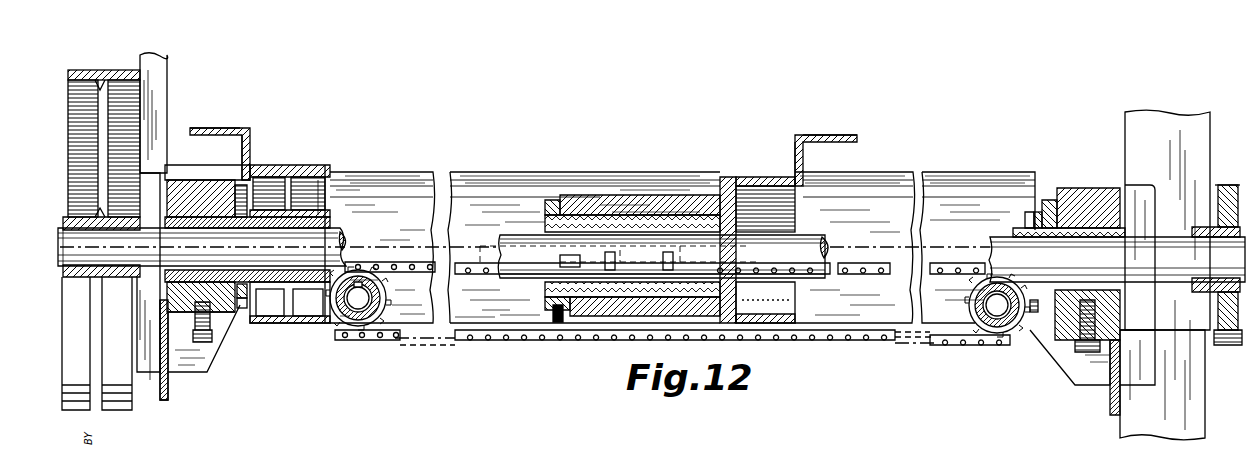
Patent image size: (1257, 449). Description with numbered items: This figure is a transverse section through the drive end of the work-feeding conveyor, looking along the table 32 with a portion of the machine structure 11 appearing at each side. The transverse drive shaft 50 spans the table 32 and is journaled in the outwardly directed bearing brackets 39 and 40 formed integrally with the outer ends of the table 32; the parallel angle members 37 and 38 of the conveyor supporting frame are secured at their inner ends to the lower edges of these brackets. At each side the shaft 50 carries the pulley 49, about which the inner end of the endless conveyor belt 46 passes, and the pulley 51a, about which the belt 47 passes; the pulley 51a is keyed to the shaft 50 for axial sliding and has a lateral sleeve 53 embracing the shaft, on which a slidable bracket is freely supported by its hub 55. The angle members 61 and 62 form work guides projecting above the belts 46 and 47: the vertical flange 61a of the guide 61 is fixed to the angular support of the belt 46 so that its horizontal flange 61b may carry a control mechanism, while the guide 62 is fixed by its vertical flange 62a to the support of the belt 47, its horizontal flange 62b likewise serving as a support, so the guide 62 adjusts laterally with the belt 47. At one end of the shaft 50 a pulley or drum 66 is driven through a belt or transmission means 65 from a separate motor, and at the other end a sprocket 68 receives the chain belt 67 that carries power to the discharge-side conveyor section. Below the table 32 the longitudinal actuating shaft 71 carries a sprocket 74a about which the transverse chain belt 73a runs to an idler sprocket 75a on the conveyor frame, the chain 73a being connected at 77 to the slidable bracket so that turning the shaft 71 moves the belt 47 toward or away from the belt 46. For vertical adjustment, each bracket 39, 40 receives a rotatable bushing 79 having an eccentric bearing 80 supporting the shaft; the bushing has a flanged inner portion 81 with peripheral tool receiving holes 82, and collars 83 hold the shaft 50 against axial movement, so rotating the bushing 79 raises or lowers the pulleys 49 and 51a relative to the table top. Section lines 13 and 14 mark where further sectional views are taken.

The machine frame wall 11 is at (133, 58).
The section line 13 is at (544, 413).
The section line 14 is at (1033, 422).
The table 32 is at (460, 312).
The angle member 37 is at (1120, 405).
The angle member 38 is at (168, 388).
The bearing bracket 39 is at (1080, 188).
The bearing bracket 40 is at (193, 190).
The endless conveyor belt 46 is at (285, 165).
The endless conveyor belt 47 is at (728, 177).
The pulley 49 is at (330, 172).
The transverse drive shaft 50 is at (345, 238).
The pulley 51a is at (760, 177).
The hub or sleeve portion 53 is at (595, 215).
The hub 55 is at (632, 195).
The angle member 61 is at (250, 133).
The vertical flange 61a is at (250, 150).
The horizontal flange 61b is at (232, 128).
The angular guide 62 is at (798, 132).
The vertical flange 62a is at (796, 145).
The horizontal flange 62b is at (857, 135).
The belt or transmission means 65 is at (90, 70).
The pulley or drum 66 is at (70, 95).
The chain belt 67 is at (1226, 190).
The sprocket 68 is at (1240, 340).
The shaft 71 is at (352, 312).
The chain belt 73a is at (505, 342).
The sprocket 74a is at (375, 322).
The idler sprocket 75a is at (995, 327).
The connection 77 is at (620, 238).
The rotatable bushing 79 is at (168, 280).
The eccentric bearing 80 is at (170, 222).
The flanged inner portion 81 is at (1025, 218).
The tool receiving hole 82 is at (243, 300).
The collar 83 is at (1015, 230).